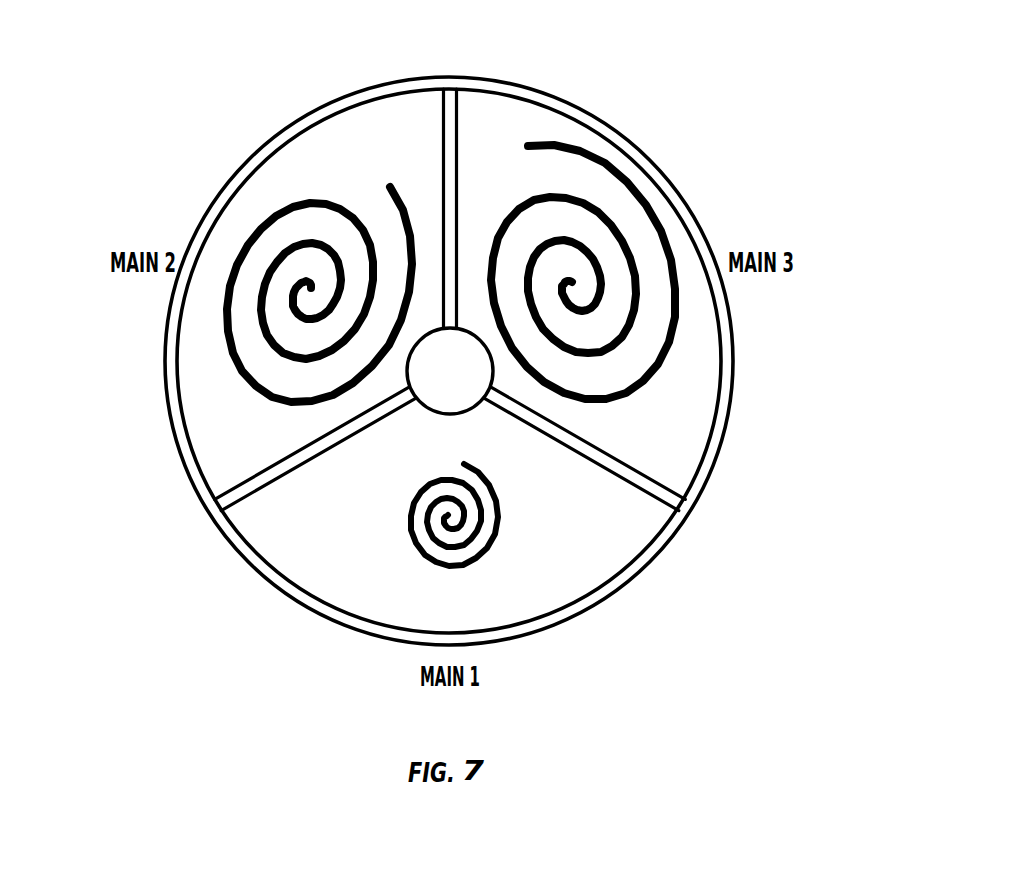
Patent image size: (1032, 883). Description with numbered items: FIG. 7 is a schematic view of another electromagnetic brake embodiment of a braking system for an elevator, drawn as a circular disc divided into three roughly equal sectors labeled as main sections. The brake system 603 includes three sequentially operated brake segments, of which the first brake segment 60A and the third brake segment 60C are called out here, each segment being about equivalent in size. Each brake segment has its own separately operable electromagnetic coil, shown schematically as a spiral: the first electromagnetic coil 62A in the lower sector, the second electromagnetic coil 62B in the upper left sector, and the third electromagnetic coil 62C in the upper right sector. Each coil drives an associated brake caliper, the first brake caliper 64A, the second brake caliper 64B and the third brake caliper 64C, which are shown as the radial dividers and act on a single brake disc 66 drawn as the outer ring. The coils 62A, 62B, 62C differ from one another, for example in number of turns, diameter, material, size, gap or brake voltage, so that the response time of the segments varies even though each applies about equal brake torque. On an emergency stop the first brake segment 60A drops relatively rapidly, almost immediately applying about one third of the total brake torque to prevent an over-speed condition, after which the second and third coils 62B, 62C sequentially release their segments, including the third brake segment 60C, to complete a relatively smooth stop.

The third brake segment 60C is at (797, 227).
The first brake segment 60A is at (585, 634).
The spiral pattern member 603 is at (131, 413).
The brake disc 66 is at (733, 437).
The first brake caliper 64A is at (611, 544).
The second brake caliper 64B is at (232, 436).
The third brake caliper 64C is at (493, 124).
The first electromagnetic coil 62A is at (440, 550).
The second electromagnetic coil 62B is at (268, 225).
The third electromagnetic coil 62C is at (646, 208).